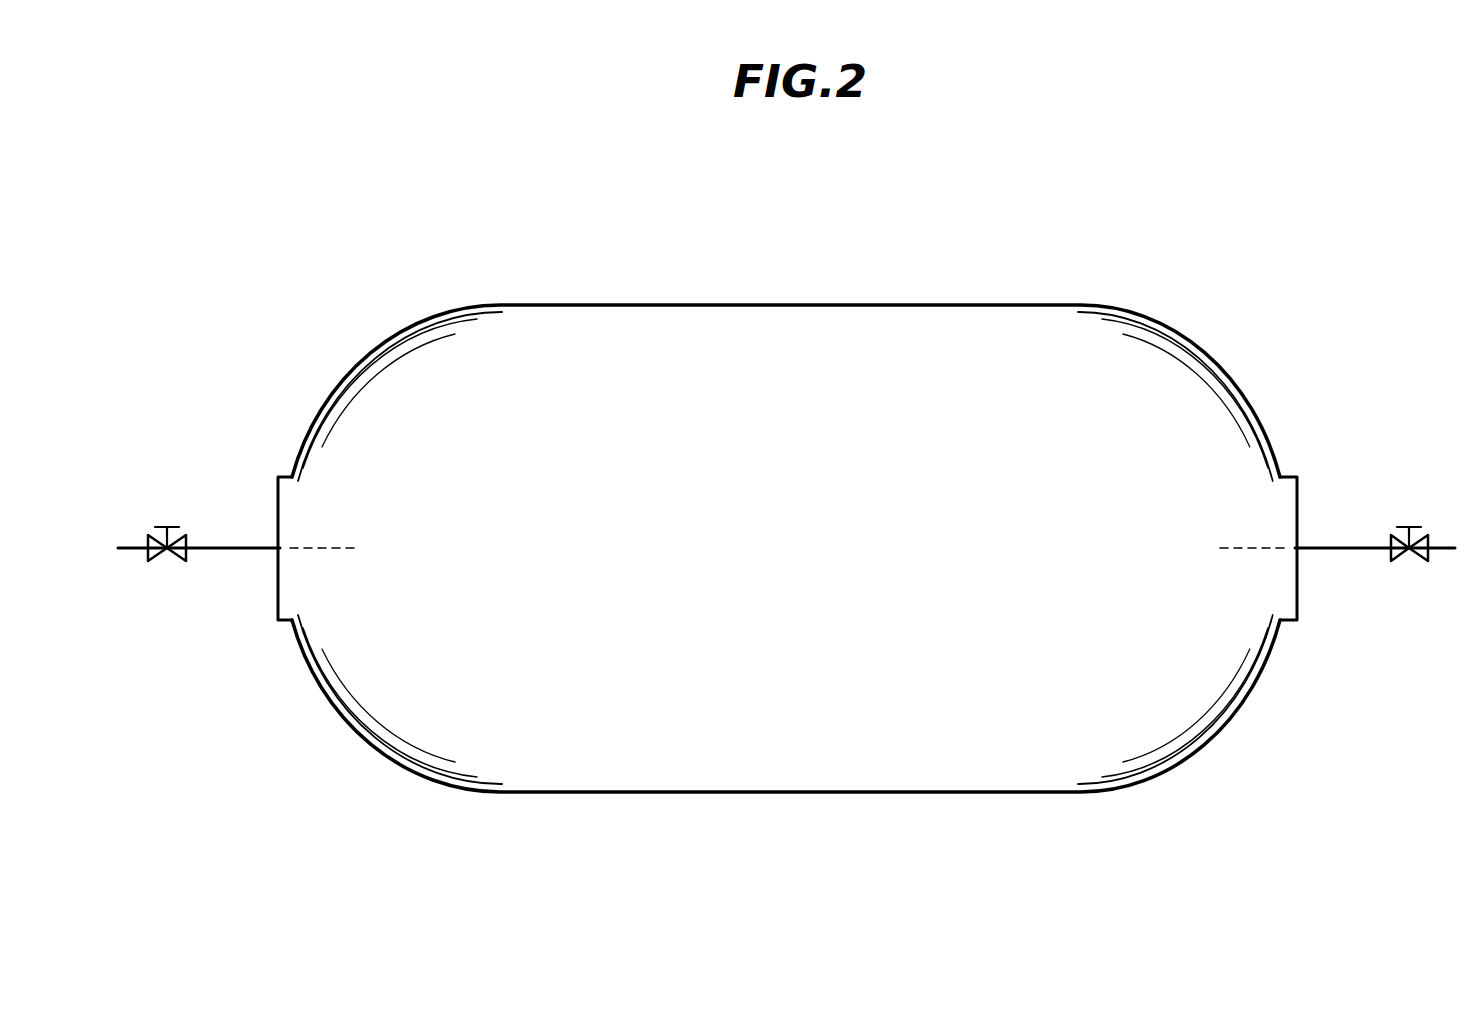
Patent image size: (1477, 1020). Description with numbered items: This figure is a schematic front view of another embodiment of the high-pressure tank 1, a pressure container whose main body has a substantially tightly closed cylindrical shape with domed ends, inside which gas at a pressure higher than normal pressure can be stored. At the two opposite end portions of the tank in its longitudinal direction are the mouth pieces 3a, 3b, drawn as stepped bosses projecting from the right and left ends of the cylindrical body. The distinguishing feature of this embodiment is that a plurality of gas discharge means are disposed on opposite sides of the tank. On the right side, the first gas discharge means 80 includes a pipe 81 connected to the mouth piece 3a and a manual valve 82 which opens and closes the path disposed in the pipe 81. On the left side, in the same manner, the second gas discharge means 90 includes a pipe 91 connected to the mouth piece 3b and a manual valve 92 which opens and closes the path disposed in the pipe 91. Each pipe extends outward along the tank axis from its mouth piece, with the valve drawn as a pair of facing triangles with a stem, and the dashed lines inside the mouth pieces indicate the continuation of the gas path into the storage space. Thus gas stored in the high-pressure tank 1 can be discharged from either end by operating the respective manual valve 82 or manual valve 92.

The high-pressure tank 1 is at (744, 306).
The mouth piece 3a is at (1290, 590).
The mouth piece 3b is at (285, 592).
The first gas discharge means 80 is at (1338, 458).
The pipe 81 is at (1355, 546).
The manual valve 82 is at (1410, 527).
The second gas discharge means 90 is at (173, 467).
The pipe 91 is at (245, 546).
The manual valve 92 is at (166, 526).